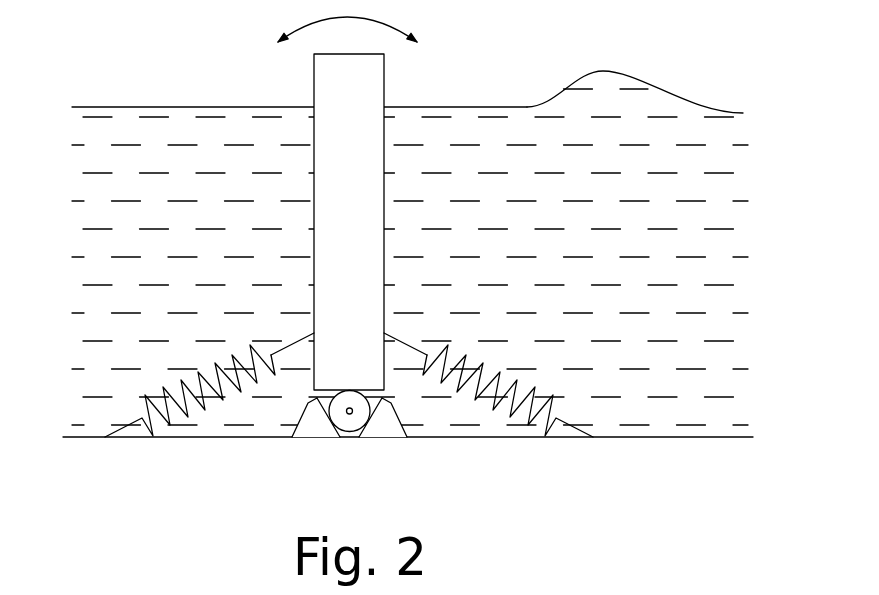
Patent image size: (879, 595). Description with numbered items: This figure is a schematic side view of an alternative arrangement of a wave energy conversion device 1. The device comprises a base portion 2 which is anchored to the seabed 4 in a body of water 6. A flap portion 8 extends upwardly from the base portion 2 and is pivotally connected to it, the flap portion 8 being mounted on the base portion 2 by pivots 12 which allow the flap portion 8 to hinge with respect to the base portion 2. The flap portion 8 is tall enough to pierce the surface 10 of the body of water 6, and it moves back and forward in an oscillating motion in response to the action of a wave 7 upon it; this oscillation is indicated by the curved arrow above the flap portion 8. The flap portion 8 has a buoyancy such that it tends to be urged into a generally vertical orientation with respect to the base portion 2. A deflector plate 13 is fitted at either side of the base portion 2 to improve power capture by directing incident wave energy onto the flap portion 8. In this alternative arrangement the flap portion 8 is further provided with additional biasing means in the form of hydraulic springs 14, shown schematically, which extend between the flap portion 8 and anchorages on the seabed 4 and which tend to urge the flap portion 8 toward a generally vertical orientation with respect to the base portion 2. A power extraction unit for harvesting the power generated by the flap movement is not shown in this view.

The wave energy conversion device 1 is at (262, 312).
The base portion 2 is at (362, 437).
The seabed 4 is at (700, 437).
The body of water 6 is at (559, 243).
The wave 7 is at (640, 78).
The flap portion 8 is at (358, 102).
The surface 10 is at (118, 106).
The pivots 12 is at (348, 414).
The deflector plate 13 is at (308, 403).
The hydraulic springs 14 is at (205, 405).